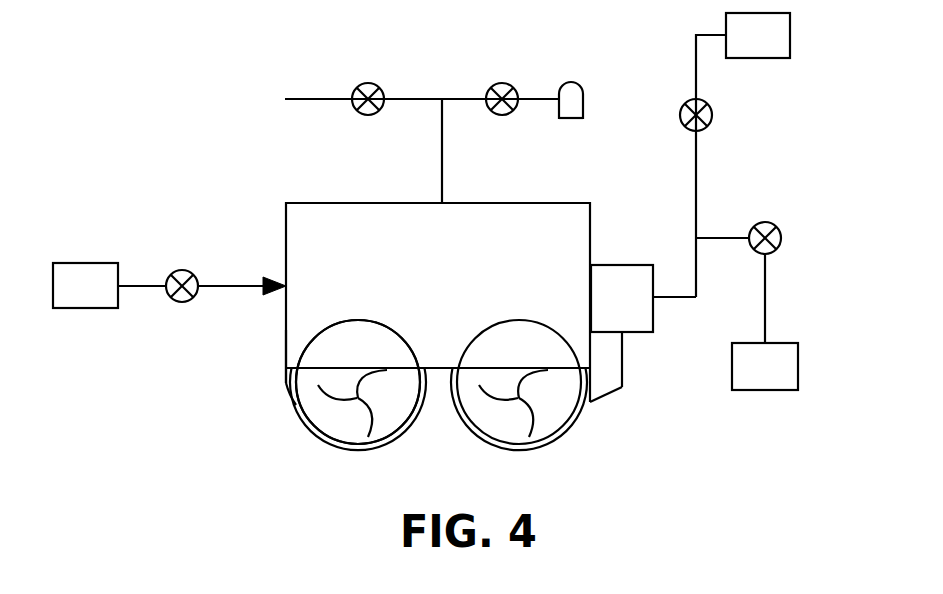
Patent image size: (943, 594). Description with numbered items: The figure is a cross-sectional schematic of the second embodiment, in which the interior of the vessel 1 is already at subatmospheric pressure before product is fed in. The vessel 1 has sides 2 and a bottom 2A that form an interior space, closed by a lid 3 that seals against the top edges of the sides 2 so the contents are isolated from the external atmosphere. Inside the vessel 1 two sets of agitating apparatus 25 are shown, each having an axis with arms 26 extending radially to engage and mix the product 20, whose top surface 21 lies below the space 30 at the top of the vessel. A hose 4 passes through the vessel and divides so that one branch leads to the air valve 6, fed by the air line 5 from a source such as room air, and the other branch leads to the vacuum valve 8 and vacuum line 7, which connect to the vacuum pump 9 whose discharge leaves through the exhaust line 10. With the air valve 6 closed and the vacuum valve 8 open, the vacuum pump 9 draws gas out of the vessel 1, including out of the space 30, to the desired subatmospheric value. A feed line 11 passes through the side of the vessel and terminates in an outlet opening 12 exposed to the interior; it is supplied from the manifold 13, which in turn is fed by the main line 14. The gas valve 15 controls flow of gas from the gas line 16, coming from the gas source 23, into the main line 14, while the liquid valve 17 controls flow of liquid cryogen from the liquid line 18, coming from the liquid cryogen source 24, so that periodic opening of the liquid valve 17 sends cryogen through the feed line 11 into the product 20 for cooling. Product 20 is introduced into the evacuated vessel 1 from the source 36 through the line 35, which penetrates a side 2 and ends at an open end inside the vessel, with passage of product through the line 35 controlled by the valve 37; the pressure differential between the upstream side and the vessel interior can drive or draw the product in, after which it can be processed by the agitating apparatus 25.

The vessel 1 is at (280, 252).
The sides 2 is at (288, 320).
The bottom 2A is at (480, 440).
The lid 3 is at (438, 304).
The hose 4 is at (422, 137).
The air line 5 is at (318, 85).
The air valve 6 is at (366, 80).
The vacuum line 7 is at (538, 85).
The vacuum valve 8 is at (501, 82).
The vacuum pump 9 is at (573, 81).
The exhaust line 10 is at (586, 100).
The feed line 11 is at (624, 364).
The outlet opening 12 is at (589, 405).
The manifold 13 is at (622, 298).
The main line 14 is at (674, 281).
The gas valve 15 is at (711, 126).
The gas line 16 is at (693, 156).
The liquid valve 17 is at (771, 219).
The liquid line 18 is at (784, 298).
The product 20 is at (289, 382).
The top surface 21 is at (335, 368).
The gas source 23 is at (758, 35).
The liquid cryogen source 24 is at (765, 366).
The agitating apparatus 25 is at (482, 326).
The arms 26 is at (365, 398).
The space 30 is at (437, 273).
The line 35 is at (227, 292).
The source 36 is at (85, 285).
The valve 37 is at (175, 309).